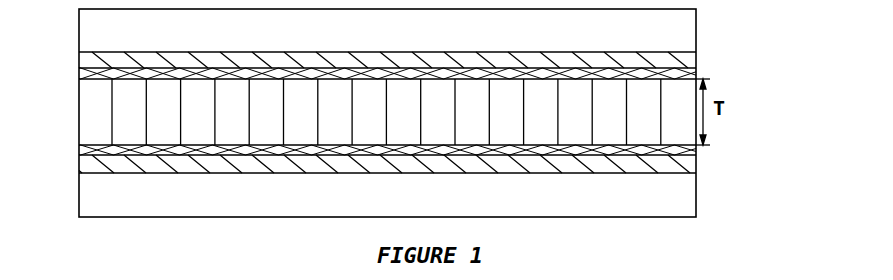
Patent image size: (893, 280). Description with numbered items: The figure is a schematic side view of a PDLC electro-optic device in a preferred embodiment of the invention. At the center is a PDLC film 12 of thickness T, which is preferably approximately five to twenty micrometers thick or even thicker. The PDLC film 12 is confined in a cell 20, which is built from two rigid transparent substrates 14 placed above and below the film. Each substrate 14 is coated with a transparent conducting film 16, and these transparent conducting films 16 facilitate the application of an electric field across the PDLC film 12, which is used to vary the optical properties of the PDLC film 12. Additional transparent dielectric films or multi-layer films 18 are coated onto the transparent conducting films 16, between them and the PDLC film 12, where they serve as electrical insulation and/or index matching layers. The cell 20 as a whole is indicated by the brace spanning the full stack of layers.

The cell 20 is at (70, 9).
The rigid transparent substrate 14 is at (387, 113).
The transparent conducting film 16 is at (685, 63).
The transparent dielectric film or multi-layer film 18 is at (690, 77).
The PDLC film 12 is at (386, 112).